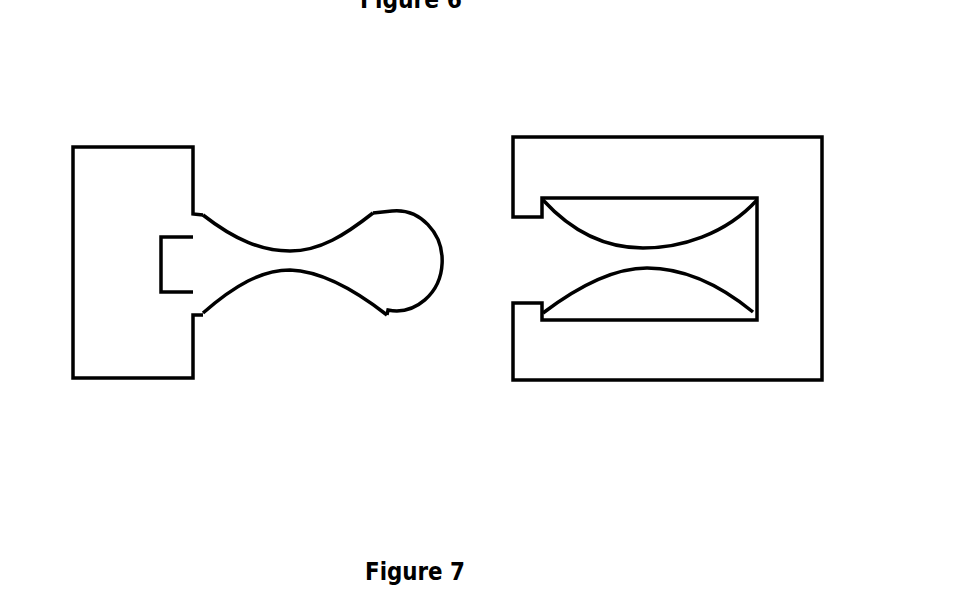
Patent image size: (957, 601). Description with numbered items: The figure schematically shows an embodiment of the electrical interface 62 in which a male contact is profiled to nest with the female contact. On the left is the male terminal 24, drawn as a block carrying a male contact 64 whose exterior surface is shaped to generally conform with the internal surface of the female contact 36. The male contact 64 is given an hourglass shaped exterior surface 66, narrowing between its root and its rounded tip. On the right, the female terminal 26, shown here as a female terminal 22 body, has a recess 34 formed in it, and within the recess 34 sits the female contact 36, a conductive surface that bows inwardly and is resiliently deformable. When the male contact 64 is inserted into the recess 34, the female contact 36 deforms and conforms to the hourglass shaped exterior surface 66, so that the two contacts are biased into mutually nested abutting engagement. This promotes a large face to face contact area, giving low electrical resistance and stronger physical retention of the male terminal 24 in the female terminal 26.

The female terminal 22 is at (757, 148).
The male terminal 24 is at (167, 118).
The female terminal 26 is at (694, 215).
The recess 34 is at (730, 265).
The female contact 36 is at (727, 228).
The electrical interface 62 is at (429, 189).
The male contact 64 is at (398, 211).
The hourglass shaped exterior surface 66 is at (228, 235).